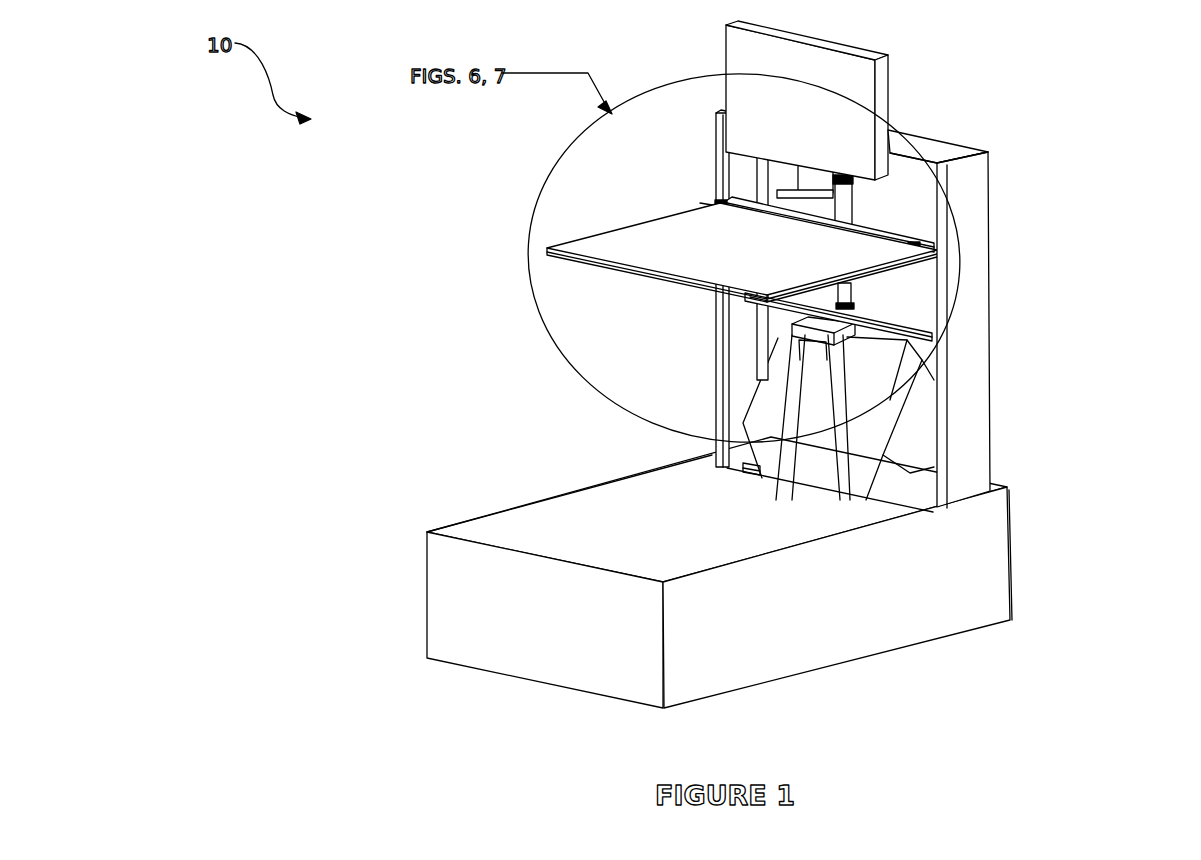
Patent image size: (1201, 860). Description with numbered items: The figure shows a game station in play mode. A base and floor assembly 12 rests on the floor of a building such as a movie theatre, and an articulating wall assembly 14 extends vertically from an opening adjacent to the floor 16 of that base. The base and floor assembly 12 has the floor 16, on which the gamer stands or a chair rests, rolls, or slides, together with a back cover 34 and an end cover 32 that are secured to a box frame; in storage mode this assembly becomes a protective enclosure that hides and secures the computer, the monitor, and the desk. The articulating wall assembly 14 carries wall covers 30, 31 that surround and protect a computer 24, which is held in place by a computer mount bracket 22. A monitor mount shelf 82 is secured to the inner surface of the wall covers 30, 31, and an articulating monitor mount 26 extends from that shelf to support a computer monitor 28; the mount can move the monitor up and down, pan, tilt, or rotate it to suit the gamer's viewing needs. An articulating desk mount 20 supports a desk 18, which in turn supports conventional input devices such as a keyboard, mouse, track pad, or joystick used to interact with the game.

The base and floor assembly 12 is at (721, 576).
The articulating wall assembly 14 is at (1120, 515).
The floor 16 is at (600, 510).
The desk 18 is at (617, 233).
The articulating desk mount 20 is at (918, 244).
The computer mount bracket 22 is at (778, 402).
The computer 24 is at (917, 405).
The articulating monitor mount 26 is at (842, 218).
The computer monitor 28 is at (860, 118).
The wall cover 30 is at (985, 307).
The wall cover 31 is at (945, 147).
The end cover 32 is at (958, 607).
The back cover 34 is at (502, 623).
The monitor mount shelf 82 is at (905, 303).